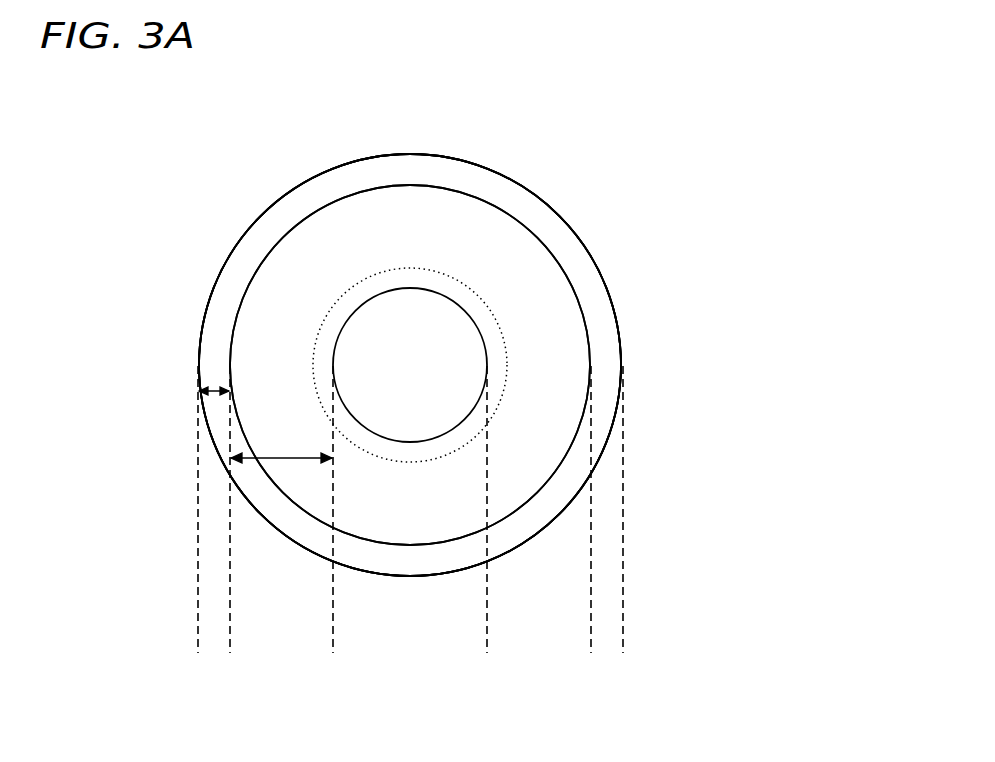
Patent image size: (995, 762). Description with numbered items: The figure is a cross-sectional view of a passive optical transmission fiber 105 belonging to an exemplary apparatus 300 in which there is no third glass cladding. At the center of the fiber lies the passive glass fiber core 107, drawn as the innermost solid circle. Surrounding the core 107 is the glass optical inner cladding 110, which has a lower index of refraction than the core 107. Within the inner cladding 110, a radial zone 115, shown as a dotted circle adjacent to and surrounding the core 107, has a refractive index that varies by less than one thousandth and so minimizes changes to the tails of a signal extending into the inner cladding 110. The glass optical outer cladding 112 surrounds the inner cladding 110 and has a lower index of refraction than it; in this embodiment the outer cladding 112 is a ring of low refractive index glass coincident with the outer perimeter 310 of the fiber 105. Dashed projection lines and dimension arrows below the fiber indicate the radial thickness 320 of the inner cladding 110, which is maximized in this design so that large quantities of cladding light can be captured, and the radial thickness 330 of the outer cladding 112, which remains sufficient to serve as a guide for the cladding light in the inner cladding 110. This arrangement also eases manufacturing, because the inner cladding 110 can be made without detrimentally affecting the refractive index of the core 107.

The apparatus 300 is at (688, 92).
The passive optical transmission fiber 105 is at (163, 166).
The passive glass fiber core 107 is at (432, 310).
The glass optical inner cladding 110 is at (517, 297).
The radial zone 115 is at (500, 351).
The glass optical outer cladding 112 is at (607, 376).
The outer perimeter 310 is at (211, 291).
The radial thickness of inner cladding 320 is at (283, 460).
The radial thickness of outer cladding 330 is at (216, 394).